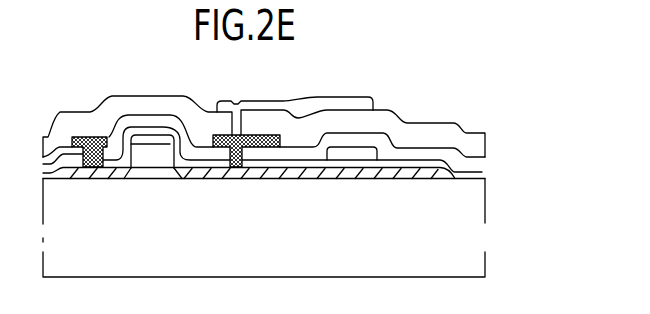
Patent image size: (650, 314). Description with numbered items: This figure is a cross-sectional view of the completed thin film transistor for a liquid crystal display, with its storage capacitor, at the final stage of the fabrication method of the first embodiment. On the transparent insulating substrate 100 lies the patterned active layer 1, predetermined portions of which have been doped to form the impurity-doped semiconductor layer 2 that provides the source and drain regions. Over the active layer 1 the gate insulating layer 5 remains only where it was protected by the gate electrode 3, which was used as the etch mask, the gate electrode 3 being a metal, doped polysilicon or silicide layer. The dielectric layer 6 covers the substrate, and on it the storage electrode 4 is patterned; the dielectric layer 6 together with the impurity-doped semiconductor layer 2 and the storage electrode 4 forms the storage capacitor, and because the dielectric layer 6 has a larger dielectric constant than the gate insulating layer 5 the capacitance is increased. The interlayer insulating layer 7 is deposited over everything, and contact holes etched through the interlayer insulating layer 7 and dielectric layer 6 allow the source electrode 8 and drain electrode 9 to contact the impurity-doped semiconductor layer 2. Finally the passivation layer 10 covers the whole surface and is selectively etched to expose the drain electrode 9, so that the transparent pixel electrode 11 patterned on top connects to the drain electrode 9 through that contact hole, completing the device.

The active layer 1 is at (168, 172).
The impurity-doped semiconductor layer 2 is at (293, 172).
The gate electrode 3 is at (148, 143).
The storage electrode 4 is at (357, 153).
The gate insulating layer 5 is at (147, 156).
The dielectric layer 6 is at (482, 173).
The interlayer insulating layer 7 is at (151, 120).
The source electrode 8 is at (97, 168).
The drain electrode 9 is at (237, 168).
The passivation layer 10 is at (472, 145).
The pixel electrode 11 is at (355, 106).
The transparent insulating substrate 100 is at (476, 243).